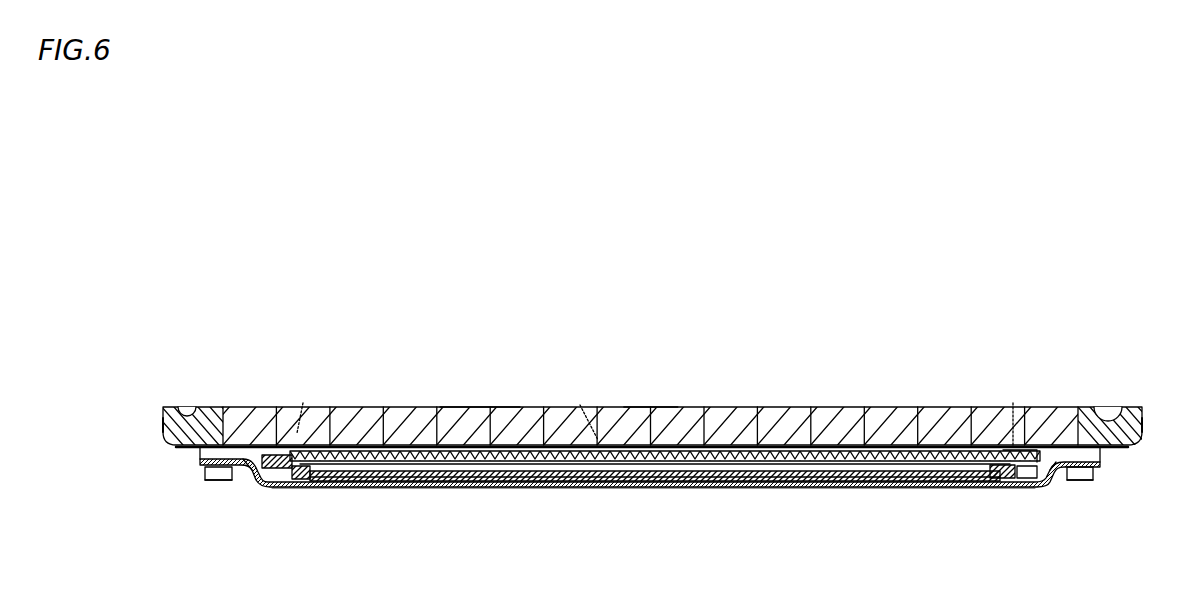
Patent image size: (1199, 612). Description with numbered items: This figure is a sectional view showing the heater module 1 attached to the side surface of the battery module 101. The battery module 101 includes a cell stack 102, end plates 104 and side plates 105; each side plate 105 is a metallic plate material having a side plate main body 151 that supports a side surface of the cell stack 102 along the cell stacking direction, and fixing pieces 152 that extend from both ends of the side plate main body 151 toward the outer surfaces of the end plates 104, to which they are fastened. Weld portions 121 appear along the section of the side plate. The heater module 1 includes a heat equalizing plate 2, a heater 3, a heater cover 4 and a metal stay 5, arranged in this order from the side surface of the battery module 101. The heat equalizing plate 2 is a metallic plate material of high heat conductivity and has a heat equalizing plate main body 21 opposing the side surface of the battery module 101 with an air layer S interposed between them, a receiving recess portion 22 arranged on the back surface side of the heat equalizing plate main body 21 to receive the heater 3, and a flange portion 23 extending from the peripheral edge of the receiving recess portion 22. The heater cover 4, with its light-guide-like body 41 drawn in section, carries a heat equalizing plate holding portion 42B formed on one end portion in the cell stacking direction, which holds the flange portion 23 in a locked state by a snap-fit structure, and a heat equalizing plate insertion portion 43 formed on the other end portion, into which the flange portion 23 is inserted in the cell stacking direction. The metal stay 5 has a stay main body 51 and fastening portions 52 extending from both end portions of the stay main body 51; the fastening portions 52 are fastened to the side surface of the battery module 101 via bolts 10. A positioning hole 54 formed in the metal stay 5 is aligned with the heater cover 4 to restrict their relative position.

The heater module 1 is at (405, 488).
The heat equalizing plate 2 is at (480, 379).
The heat equalizing plate main body 21 is at (477, 404).
The heater 3 is at (462, 487).
The heater cover 4 is at (655, 498).
The light guide plate 41 is at (730, 481).
The heat equalizing plate holding portion 42B is at (1014, 479).
The heat equalizing plate insertion portion 43 is at (290, 479).
The metal stay 5 is at (655, 505).
The stay main body 51 is at (633, 482).
The bolt 10 is at (217, 481).
The receiving recess portion 22 is at (547, 462).
The flange portion 23 is at (303, 403).
The fastening portion 52 is at (203, 479).
The positioning hole 54 is at (243, 487).
The battery module 101 is at (652, 379).
The cell stack 102 is at (786, 403).
The end plate 104 is at (210, 403).
The side plate 105 is at (691, 484).
The side plate main body 151 is at (1108, 467).
The weld portions 121 is at (715, 405).
The fixing piece 152 is at (163, 428).
The air layer S is at (579, 405).